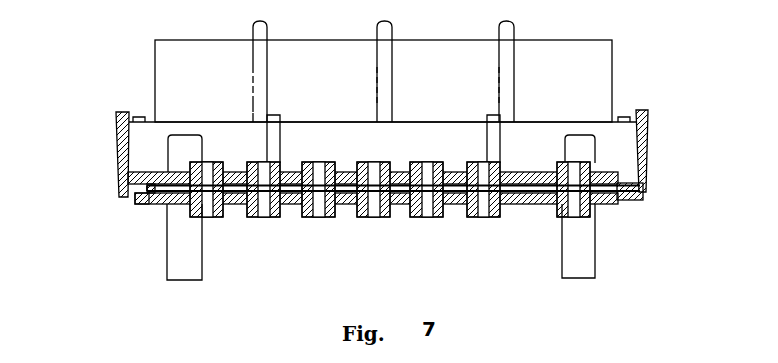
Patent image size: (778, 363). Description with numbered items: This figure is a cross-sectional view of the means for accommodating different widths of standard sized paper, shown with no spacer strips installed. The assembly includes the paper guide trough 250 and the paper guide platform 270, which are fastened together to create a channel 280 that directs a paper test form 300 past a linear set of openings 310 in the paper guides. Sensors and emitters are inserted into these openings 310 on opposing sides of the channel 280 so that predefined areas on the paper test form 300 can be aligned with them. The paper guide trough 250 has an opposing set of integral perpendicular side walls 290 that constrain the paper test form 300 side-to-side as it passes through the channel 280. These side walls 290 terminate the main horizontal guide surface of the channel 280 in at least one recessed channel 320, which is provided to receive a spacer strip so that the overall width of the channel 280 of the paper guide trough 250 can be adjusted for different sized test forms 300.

The paper guide trough 250 is at (612, 63).
The paper guide platform 270 is at (597, 265).
The channel 280 is at (532, 201).
The side walls 290 is at (643, 191).
The paper test form 300 is at (147, 202).
The openings 310 is at (372, 217).
The recessed channel 320 is at (617, 200).